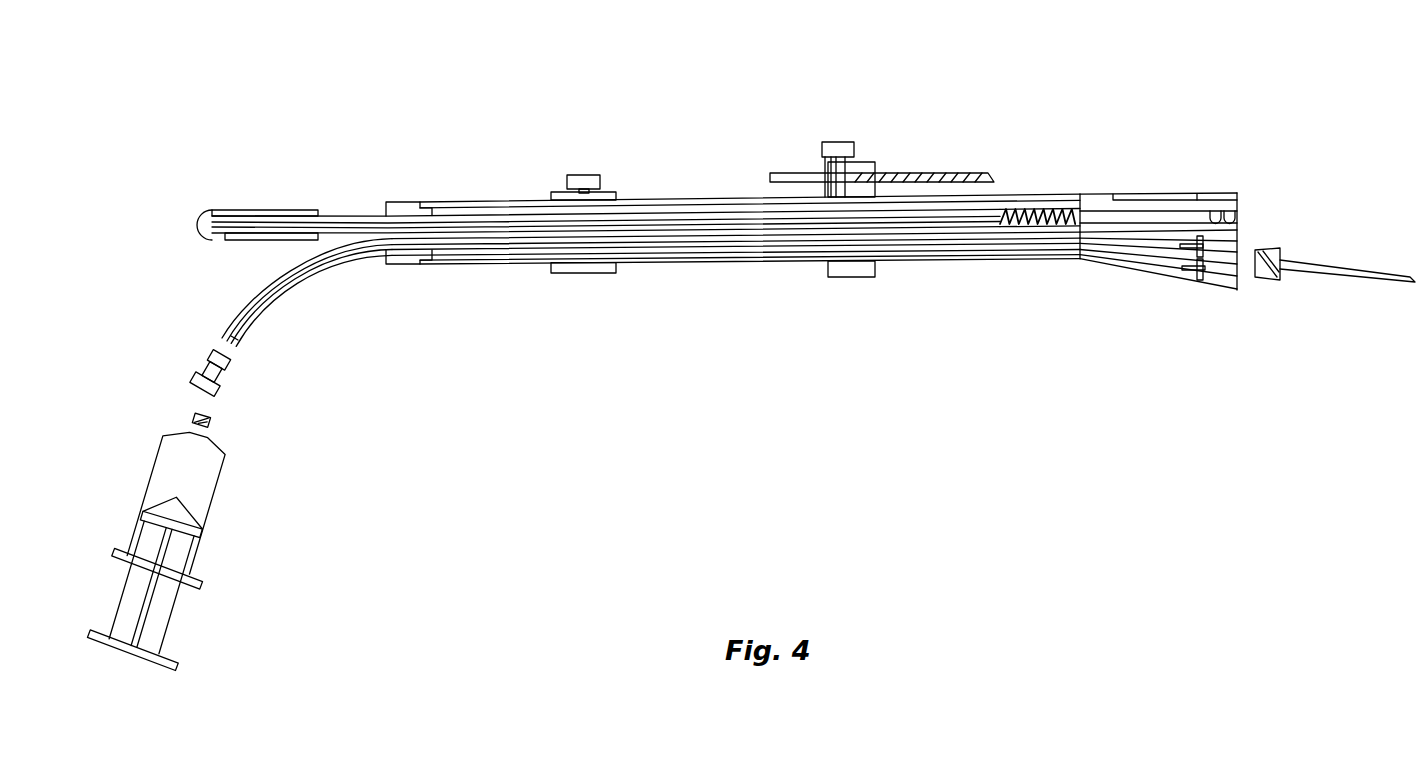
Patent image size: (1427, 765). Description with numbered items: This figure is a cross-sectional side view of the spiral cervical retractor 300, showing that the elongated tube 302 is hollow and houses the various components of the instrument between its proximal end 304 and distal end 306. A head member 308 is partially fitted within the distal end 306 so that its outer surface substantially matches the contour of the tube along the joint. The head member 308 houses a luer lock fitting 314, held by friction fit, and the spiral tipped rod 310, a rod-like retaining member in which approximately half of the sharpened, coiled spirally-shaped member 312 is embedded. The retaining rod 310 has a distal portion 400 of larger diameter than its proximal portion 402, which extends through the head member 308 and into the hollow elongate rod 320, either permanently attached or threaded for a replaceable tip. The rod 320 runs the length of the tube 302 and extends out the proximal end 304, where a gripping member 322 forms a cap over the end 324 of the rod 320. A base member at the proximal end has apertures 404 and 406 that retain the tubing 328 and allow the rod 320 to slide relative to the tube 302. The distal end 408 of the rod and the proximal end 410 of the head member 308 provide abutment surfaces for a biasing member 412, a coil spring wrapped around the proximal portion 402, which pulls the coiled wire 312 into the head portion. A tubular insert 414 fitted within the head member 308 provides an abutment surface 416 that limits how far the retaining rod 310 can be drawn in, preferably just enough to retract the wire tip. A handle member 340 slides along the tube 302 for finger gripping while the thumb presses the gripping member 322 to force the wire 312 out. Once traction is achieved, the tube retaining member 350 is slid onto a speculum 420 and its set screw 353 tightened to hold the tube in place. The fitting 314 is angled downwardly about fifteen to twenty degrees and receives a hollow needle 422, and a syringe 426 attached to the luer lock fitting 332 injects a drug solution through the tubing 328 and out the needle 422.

The spiral cervical retractor 300 is at (750, 122).
The elongated tube 302 is at (652, 262).
The proximal end 304 is at (422, 204).
The distal end 306 is at (1096, 260).
The head member 308 is at (1162, 197).
The spiral tipped rod 310 is at (1218, 212).
The spirally-shaped member 312 is at (1237, 218).
The luer lock fitting 314 is at (1215, 288).
The elongate rod 320 is at (323, 214).
The gripping member 322 is at (217, 212).
The end of the rod 324 is at (227, 240).
The tubing 328 is at (317, 273).
The luer lock fitting 332 is at (245, 372).
The handle member 340 is at (610, 193).
The tube retaining member 350 is at (858, 277).
The set screw 353 is at (830, 142).
The distal portion 400 is at (1235, 195).
The proximal portion 402 is at (1113, 208).
The aperture 404 is at (398, 257).
The aperture 406 is at (397, 208).
The distal end of the rod 408 is at (1005, 210).
The proximal end of the head member 410 is at (1081, 196).
The biasing member 412 is at (1007, 228).
The tubular insert 414 is at (1197, 197).
The abutment surface 416 is at (1182, 247).
The speculum 420 is at (858, 162).
The hollow needle 422 is at (1300, 270).
The syringe 426 is at (222, 490).